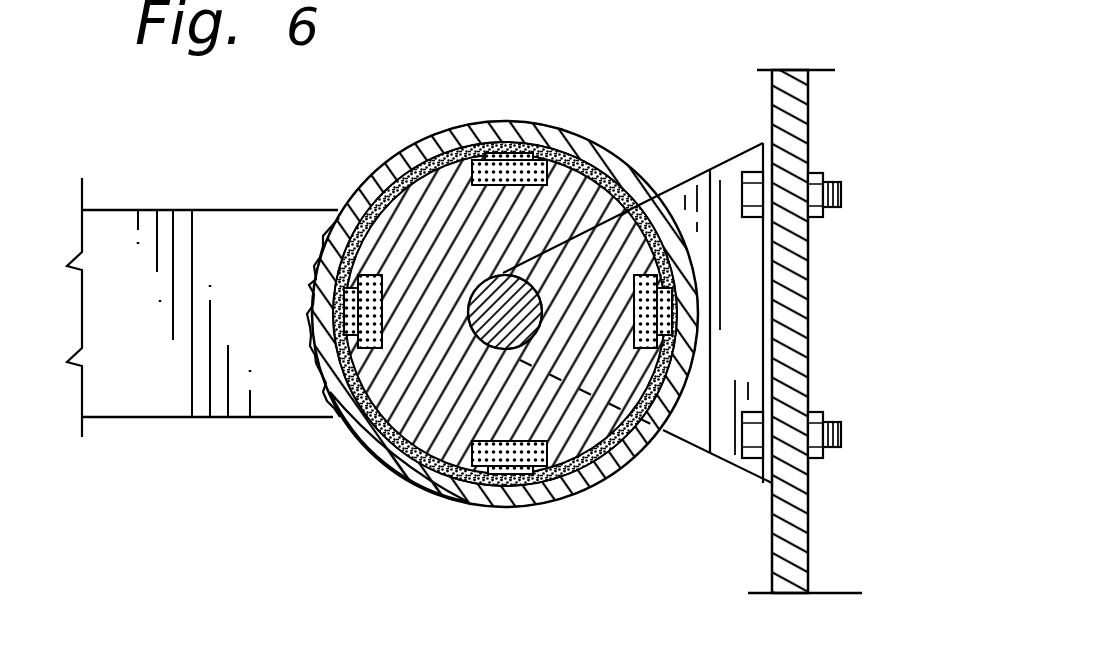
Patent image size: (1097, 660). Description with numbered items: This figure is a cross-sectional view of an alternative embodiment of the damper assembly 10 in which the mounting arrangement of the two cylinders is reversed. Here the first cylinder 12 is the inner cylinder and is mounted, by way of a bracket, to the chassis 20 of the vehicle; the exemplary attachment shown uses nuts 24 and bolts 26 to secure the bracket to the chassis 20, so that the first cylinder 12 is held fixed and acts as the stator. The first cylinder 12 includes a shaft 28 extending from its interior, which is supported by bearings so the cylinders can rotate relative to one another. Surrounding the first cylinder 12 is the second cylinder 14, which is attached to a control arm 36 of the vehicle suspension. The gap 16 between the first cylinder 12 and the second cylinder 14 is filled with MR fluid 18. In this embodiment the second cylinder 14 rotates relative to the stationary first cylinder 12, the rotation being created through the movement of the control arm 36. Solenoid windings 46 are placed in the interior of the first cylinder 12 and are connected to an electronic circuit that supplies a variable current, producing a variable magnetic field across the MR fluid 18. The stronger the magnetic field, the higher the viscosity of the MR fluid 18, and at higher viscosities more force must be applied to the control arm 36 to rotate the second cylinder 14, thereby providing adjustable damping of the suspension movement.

The flange assembly 10 is at (500, 106).
The first cylinder 12 is at (441, 440).
The second cylinder 14 is at (403, 470).
The gap 16 is at (367, 443).
The MR fluid 18 is at (392, 165).
The chassis 20 is at (808, 362).
The nuts 24 is at (820, 172).
The bolts 26 is at (836, 207).
The shaft 28 is at (520, 330).
The control arm 36 is at (141, 390).
The solenoid windings 46 is at (557, 153).